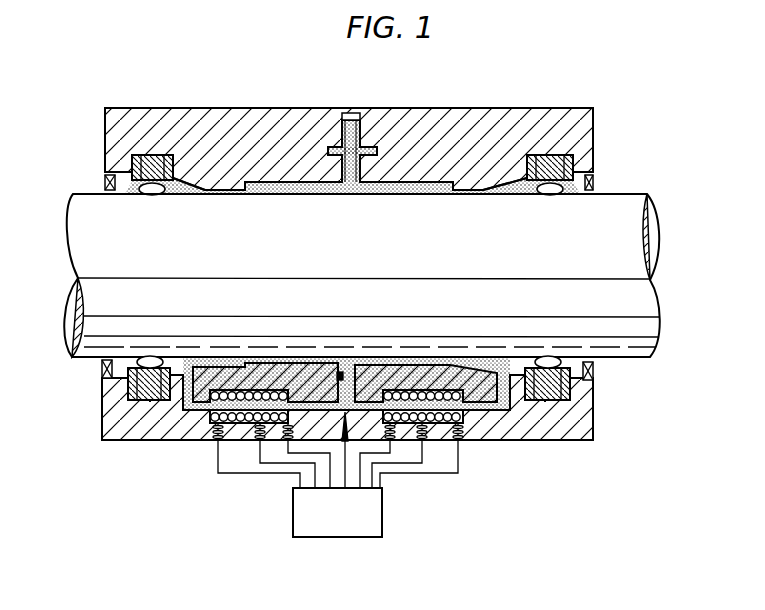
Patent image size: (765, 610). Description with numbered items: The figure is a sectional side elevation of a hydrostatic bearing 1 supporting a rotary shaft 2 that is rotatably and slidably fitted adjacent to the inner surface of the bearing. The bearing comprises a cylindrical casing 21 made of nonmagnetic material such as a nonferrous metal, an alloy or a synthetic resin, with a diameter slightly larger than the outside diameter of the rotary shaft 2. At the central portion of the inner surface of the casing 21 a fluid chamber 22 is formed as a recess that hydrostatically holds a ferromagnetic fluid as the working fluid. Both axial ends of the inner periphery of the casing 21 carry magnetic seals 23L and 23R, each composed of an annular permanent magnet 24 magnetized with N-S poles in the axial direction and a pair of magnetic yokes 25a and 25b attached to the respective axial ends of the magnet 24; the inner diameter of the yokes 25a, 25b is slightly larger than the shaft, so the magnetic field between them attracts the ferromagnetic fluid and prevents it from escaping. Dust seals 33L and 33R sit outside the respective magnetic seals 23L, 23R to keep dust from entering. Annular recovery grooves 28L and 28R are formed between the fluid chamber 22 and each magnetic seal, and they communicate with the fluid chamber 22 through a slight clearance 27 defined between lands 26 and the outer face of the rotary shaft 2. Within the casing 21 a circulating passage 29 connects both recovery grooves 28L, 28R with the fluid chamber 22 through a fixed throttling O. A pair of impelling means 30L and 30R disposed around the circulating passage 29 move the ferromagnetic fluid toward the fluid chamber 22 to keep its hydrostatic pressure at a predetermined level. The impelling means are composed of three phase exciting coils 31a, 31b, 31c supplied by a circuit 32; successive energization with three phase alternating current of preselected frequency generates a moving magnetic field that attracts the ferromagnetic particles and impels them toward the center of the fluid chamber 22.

The hydrostatic bearing 1 is at (500, 182).
The rotary shaft 2 is at (640, 335).
The cylindrical casing 21 is at (318, 120).
The fluid chamber 22 is at (420, 188).
The annular permanent magnet 24 is at (150, 404).
The lands 26 is at (245, 188).
The clearance 27 is at (225, 188).
The left annular recovery groove 28L is at (173, 165).
The right annular recovery groove 28R is at (545, 150).
The left dust seal 33L is at (102, 362).
The right dust seal 33R is at (594, 185).
The left magnetic seal 23L is at (140, 406).
The right magnetic seal 23R is at (537, 406).
The magnetic yoke 25a is at (127, 398).
The magnetic yoke 25b is at (172, 408).
The circulating passage 29 is at (487, 422).
The left impelling means 30L is at (236, 441).
The right impelling means 30R is at (447, 441).
The three phase exciting coil 31a is at (226, 372).
The three phase exciting coil 31b is at (262, 372).
The three phase exciting coil 31c is at (300, 372).
The fixed throttling O is at (347, 372).
The circuit 32 is at (382, 510).